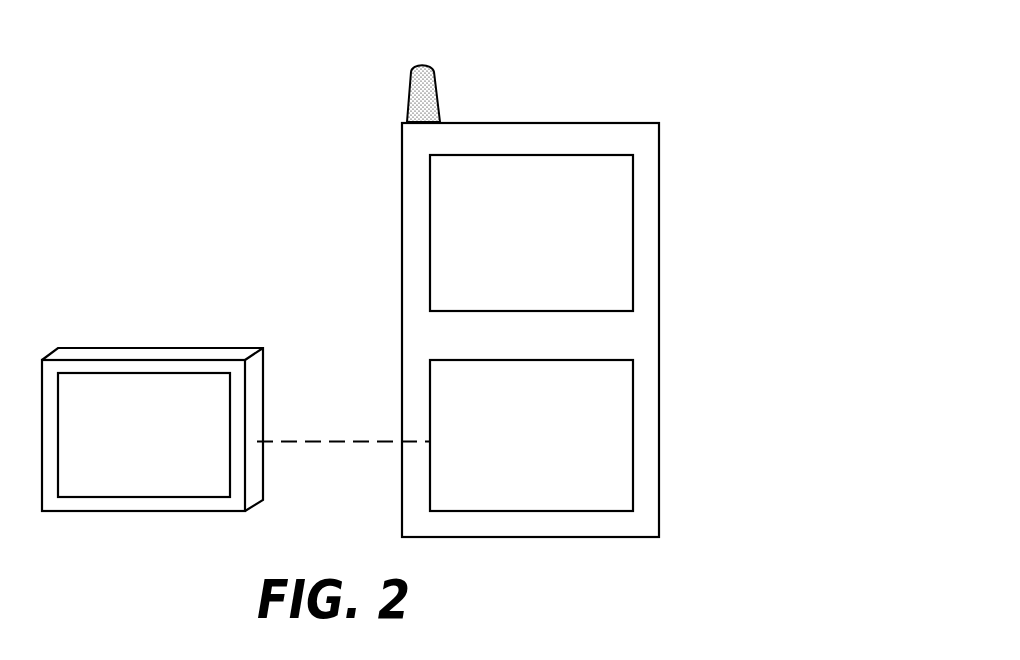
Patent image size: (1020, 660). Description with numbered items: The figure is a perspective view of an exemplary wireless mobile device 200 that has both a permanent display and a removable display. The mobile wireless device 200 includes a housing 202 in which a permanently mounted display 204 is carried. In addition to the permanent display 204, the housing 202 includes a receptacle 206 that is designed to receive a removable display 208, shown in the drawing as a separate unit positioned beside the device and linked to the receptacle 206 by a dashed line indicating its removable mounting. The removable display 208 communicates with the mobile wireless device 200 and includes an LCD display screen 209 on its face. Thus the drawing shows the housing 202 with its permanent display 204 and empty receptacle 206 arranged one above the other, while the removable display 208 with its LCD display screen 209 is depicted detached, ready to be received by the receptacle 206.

The mobile wireless device 200 is at (511, 88).
The housing 202 is at (613, 122).
The permanently mounted display 204 is at (519, 312).
The receptacle 206 is at (516, 512).
The removable display 208 is at (152, 350).
The LCD display screen 209 is at (153, 483).